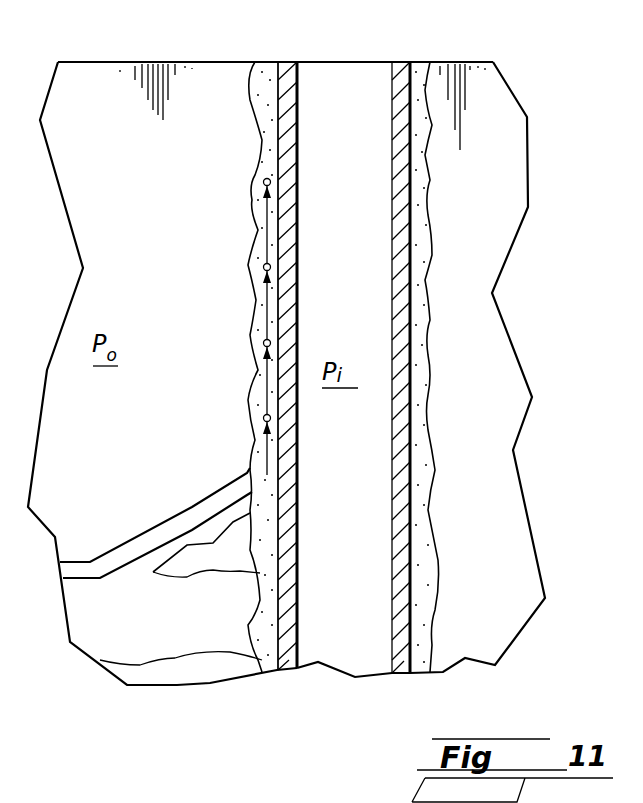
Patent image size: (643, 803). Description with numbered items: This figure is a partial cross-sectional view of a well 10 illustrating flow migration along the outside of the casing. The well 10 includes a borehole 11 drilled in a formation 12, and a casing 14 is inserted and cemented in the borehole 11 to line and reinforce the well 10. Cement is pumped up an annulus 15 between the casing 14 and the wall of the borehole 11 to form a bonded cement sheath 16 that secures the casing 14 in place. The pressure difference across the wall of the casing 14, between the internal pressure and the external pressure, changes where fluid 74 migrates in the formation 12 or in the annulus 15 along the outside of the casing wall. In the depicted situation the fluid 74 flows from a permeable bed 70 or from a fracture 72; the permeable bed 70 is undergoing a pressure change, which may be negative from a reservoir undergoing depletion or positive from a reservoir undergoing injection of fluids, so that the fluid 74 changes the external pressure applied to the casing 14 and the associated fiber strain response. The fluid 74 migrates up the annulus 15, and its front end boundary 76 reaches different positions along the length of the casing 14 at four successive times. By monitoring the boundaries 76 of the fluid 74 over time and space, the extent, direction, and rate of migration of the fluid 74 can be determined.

The well 10 is at (339, 48).
The borehole 11 is at (430, 278).
The formation 12 is at (482, 393).
The casing 14 is at (358, 225).
The annulus 15 is at (200, 347).
The cement sheath 16 is at (263, 58).
The permeable bed 70 is at (150, 626).
The fracture 72 is at (133, 548).
The fluid 74 is at (192, 510).
The front end boundary 76 is at (246, 428).